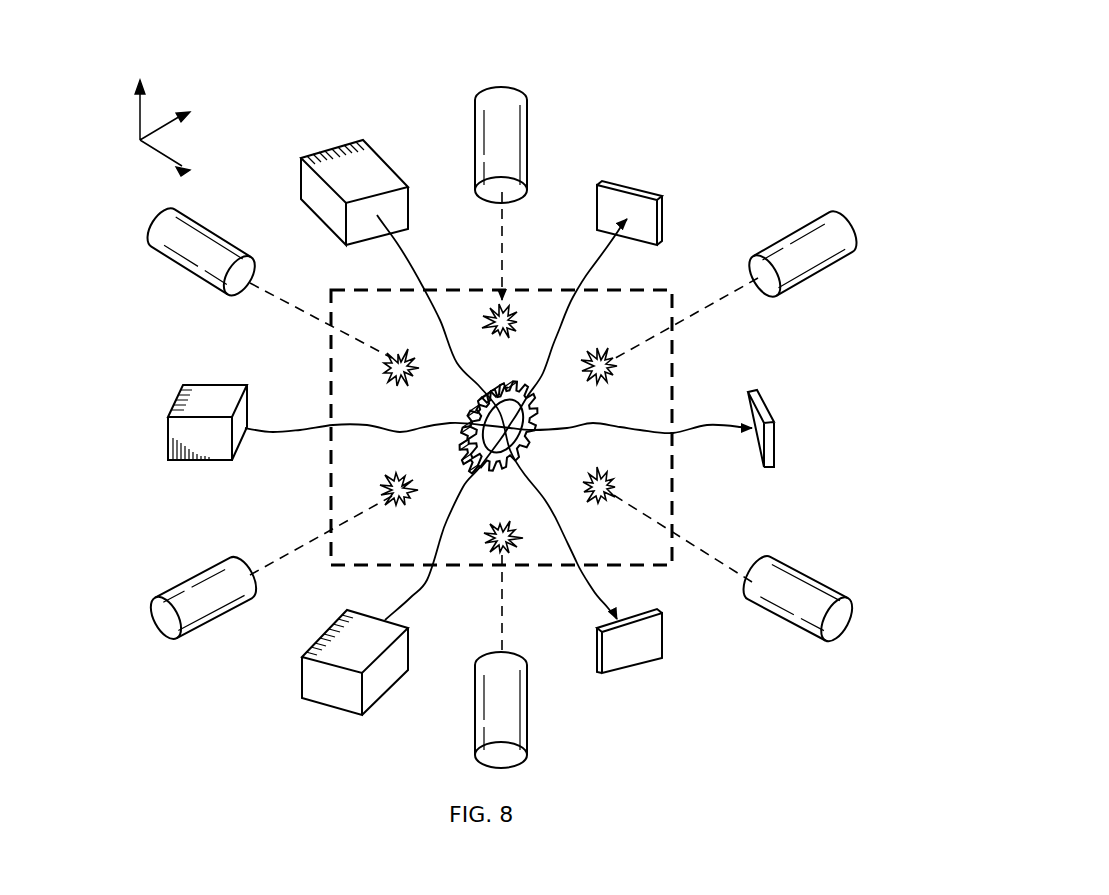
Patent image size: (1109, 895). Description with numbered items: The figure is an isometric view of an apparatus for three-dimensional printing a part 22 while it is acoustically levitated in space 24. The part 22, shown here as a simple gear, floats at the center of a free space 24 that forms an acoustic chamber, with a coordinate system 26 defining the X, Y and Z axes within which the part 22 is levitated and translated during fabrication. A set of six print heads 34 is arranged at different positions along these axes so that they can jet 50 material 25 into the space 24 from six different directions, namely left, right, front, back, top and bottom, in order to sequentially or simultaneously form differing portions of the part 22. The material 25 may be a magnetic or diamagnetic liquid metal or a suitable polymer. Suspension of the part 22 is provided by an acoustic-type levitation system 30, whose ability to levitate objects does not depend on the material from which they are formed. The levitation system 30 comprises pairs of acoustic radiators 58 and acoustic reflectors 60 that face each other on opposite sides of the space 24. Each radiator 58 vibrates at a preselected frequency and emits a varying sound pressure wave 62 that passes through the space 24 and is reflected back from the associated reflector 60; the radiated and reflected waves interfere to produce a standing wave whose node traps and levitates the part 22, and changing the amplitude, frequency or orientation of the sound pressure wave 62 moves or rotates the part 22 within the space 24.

The part 22 is at (540, 409).
The space 24 is at (682, 481).
The material 25 is at (492, 302).
The coordinate system 26 is at (178, 62).
The levitation system 30 is at (146, 380).
The print heads 34 is at (530, 152).
The jet 50 is at (282, 298).
The acoustic radiators 58 is at (328, 148).
The acoustic reflectors 60 is at (638, 184).
The sound pressure wave 62 is at (457, 360).